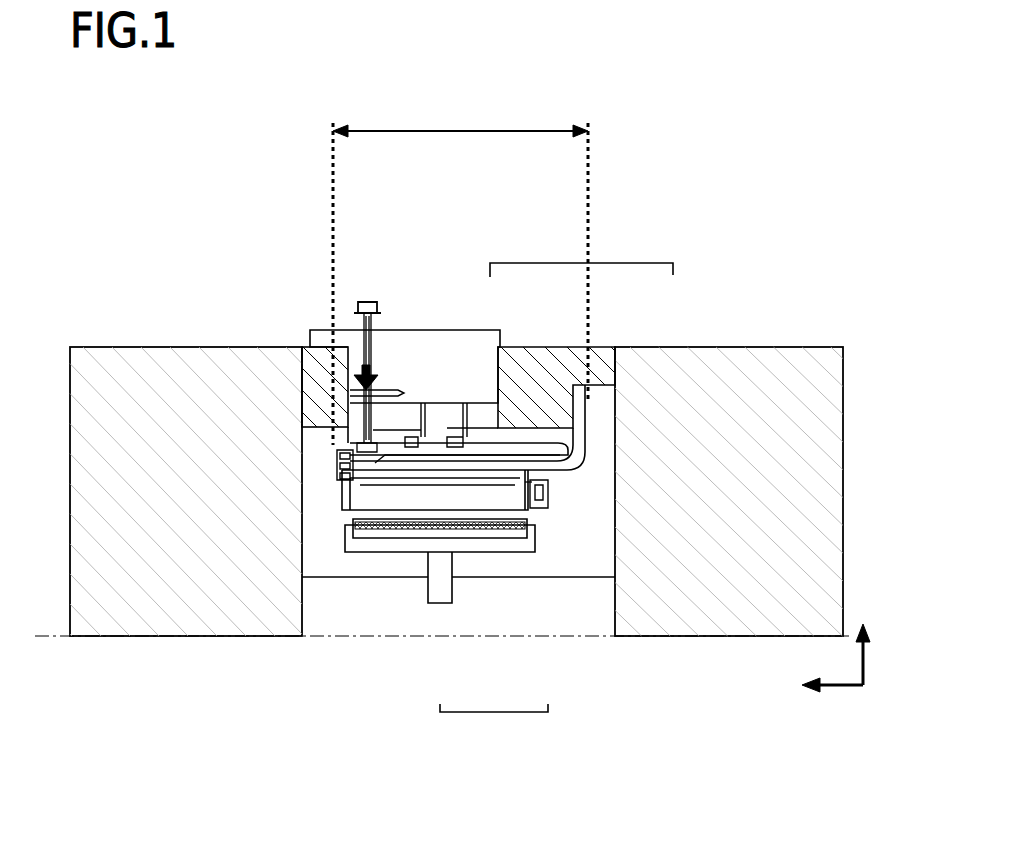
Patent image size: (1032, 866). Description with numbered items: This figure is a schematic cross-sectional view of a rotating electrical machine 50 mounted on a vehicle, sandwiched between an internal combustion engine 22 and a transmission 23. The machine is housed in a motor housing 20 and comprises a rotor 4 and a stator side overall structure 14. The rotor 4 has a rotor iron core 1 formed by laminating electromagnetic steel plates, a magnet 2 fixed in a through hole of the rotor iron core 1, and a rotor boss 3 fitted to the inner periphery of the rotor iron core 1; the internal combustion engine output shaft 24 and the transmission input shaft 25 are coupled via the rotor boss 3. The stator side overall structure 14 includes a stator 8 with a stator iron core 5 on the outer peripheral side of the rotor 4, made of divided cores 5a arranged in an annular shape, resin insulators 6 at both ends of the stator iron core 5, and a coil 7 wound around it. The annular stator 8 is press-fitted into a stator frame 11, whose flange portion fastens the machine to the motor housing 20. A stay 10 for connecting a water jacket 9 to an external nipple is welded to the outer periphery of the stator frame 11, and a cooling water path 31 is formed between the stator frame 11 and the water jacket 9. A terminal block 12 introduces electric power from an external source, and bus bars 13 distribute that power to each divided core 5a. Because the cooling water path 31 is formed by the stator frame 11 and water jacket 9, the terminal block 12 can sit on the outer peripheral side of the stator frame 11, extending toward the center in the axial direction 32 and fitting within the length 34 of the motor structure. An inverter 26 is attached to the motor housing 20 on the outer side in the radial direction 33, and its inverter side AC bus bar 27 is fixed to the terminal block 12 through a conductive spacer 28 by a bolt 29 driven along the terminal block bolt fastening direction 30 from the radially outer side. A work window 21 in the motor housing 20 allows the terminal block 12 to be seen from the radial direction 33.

The rotor iron core 1 is at (517, 535).
The magnet 2 is at (495, 526).
The rotor boss 3 is at (467, 545).
The rotor 4 is at (494, 712).
The stator iron core 5 is at (510, 483).
The divided core 5a is at (545, 491).
The resin insulator 6 is at (540, 477).
The coil 7 is at (550, 496).
The stator 8 is at (583, 265).
The water jacket 9 is at (482, 455).
The stay 10 is at (462, 437).
The stator frame 11 is at (393, 468).
The terminal block 12 is at (333, 440).
The bus bar 13 is at (335, 477).
The stator side overall structure 14 is at (545, 498).
The motor housing 20 is at (322, 362).
The work window 21 is at (403, 415).
The internal combustion engine 22 is at (143, 397).
The transmission 23 is at (762, 413).
The internal combustion engine output shaft 24 is at (336, 620).
The transmission input shaft 25 is at (558, 617).
The inverter 26 is at (413, 342).
The inverter side AC bus bar 27 is at (331, 440).
The spacer 28 is at (360, 412).
The bolt 29 is at (366, 302).
The terminal block bolt fastening direction 30 is at (373, 390).
The cooling water path 31 is at (412, 458).
The axial direction 32 is at (840, 687).
The radial direction 33 is at (866, 656).
The length in the axial direction 34 is at (457, 132).
The rotating electrical machine 50 is at (563, 338).